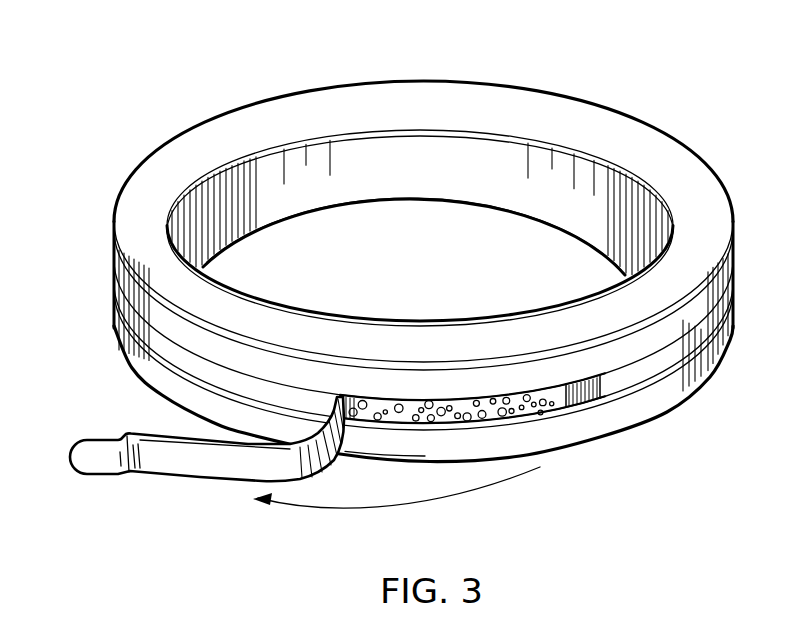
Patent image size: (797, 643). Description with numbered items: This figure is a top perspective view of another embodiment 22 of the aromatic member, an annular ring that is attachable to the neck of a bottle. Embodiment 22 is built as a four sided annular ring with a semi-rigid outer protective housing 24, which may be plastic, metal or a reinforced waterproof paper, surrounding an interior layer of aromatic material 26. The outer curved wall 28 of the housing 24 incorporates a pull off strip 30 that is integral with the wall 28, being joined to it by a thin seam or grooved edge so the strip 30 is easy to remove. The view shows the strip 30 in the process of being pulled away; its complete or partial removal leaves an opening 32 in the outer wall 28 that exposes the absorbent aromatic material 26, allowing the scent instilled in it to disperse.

The embodiment of the aromatic member 22 is at (585, 128).
The outer protective housing 24 is at (205, 143).
The aromatic material 26 is at (563, 403).
The outer curved wall 28 is at (113, 283).
The pull off strip 30 is at (107, 455).
The opening 32 is at (543, 407).